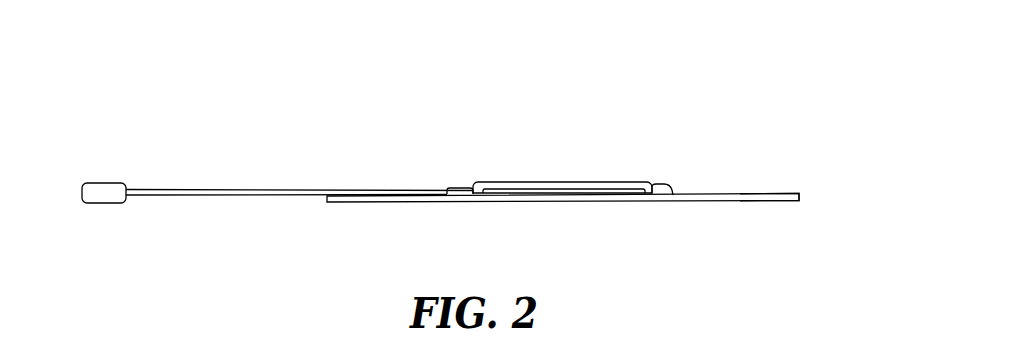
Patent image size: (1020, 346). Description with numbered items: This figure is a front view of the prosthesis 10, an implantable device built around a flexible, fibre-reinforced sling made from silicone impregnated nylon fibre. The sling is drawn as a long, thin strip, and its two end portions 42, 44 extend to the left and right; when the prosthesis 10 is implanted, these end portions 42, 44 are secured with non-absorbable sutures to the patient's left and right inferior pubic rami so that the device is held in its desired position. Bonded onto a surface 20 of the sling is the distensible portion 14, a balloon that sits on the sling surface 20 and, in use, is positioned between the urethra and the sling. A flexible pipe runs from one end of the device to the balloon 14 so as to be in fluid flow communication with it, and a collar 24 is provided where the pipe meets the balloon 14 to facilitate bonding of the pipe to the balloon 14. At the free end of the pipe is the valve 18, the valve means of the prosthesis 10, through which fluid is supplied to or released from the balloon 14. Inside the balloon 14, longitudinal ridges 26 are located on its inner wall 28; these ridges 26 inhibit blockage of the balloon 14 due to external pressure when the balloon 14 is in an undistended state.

The prosthesis 10 is at (700, 144).
The distensible portion 14 is at (517, 181).
The valve 18 is at (105, 183).
The surface 20 is at (525, 196).
The collar 24 is at (462, 186).
The longitudinal ridges 26 is at (560, 187).
The inner wall 28 is at (672, 193).
The end portion 42 is at (355, 204).
The end portion 44 is at (767, 203).